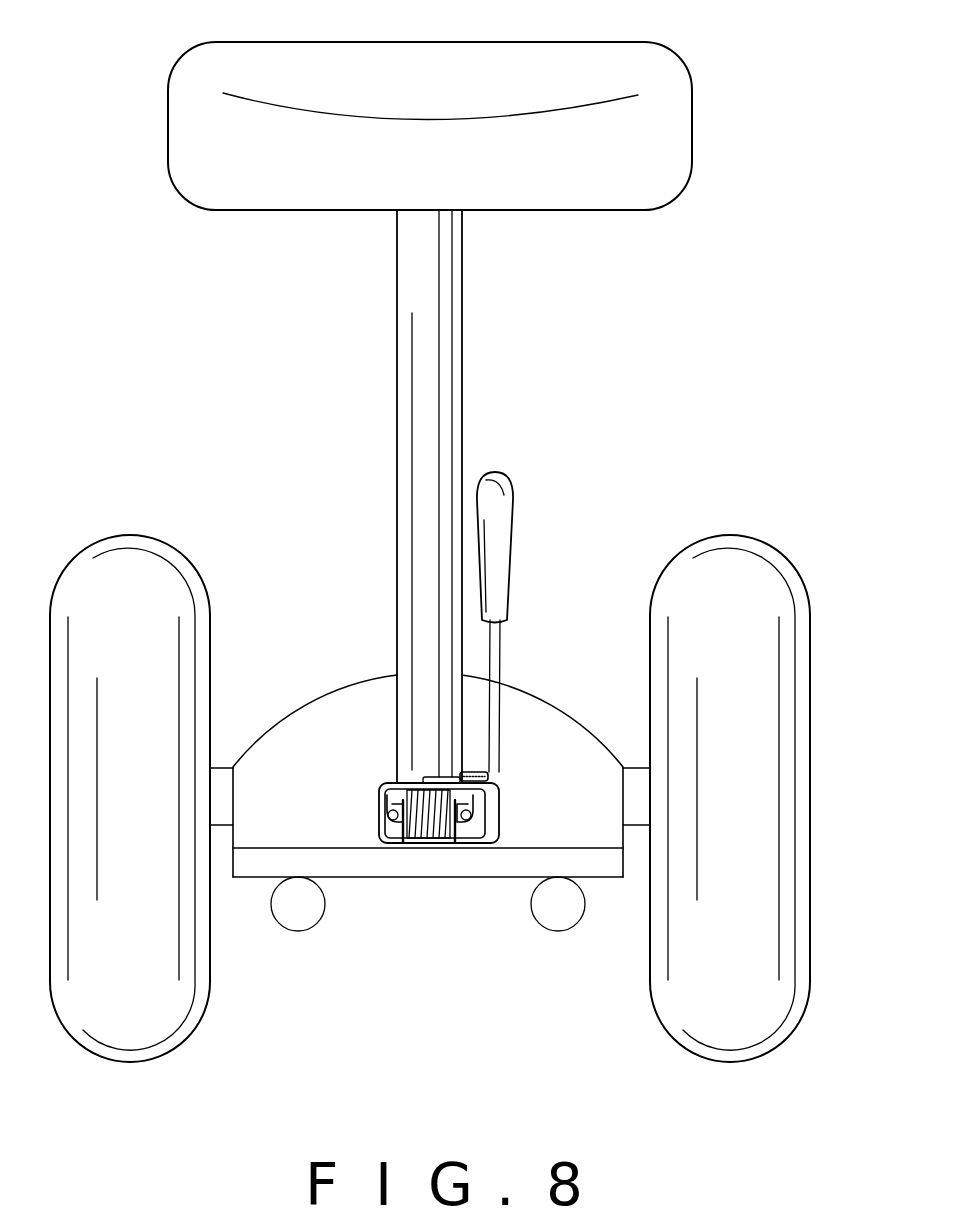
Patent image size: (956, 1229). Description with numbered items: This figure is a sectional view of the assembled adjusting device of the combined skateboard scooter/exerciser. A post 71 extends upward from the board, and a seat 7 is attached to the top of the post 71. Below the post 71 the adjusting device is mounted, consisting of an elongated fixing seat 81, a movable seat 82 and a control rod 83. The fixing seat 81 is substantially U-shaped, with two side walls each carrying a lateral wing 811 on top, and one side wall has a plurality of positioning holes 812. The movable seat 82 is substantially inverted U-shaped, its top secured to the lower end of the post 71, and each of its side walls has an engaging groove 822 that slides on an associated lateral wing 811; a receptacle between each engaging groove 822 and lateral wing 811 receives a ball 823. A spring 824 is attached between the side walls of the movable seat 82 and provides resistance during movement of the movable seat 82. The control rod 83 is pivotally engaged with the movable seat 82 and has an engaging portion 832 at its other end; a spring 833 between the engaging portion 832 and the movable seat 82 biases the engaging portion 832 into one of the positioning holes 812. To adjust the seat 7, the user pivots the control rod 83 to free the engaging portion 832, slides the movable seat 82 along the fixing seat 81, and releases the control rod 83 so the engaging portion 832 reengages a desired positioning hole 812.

The seat 7 is at (647, 163).
The post 71 is at (425, 338).
The fixing seat 81 is at (438, 845).
The lateral wing 811 is at (395, 833).
The positioning holes 812 is at (447, 843).
The movable seat 82 is at (393, 795).
The engaging groove 822 is at (385, 783).
The ball 823 is at (392, 822).
The spring 824 is at (415, 843).
The control rod 83 is at (495, 643).
The engaging portion 832 is at (468, 842).
The spring 833 is at (485, 772).